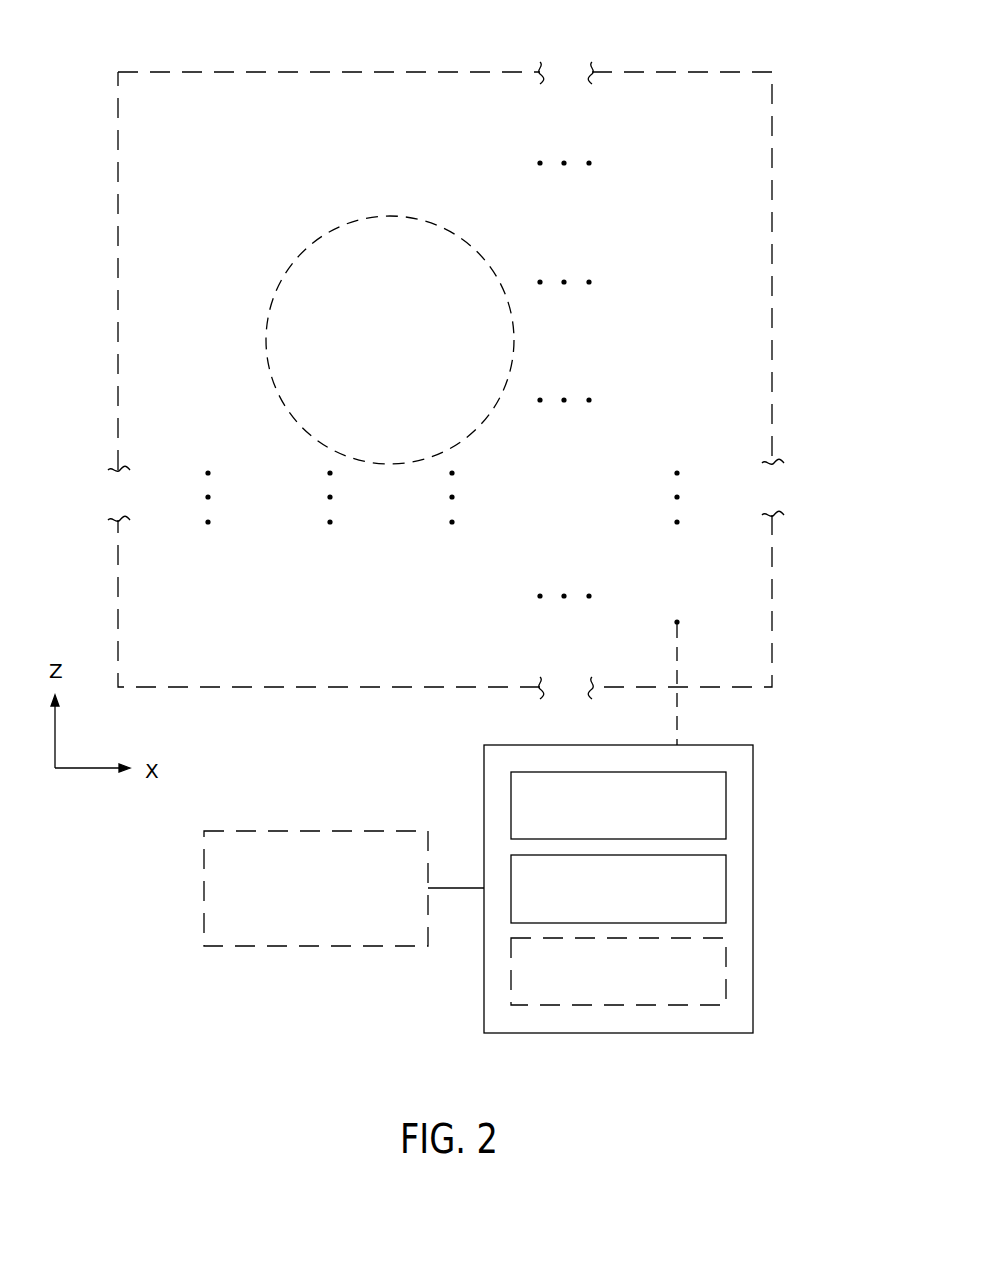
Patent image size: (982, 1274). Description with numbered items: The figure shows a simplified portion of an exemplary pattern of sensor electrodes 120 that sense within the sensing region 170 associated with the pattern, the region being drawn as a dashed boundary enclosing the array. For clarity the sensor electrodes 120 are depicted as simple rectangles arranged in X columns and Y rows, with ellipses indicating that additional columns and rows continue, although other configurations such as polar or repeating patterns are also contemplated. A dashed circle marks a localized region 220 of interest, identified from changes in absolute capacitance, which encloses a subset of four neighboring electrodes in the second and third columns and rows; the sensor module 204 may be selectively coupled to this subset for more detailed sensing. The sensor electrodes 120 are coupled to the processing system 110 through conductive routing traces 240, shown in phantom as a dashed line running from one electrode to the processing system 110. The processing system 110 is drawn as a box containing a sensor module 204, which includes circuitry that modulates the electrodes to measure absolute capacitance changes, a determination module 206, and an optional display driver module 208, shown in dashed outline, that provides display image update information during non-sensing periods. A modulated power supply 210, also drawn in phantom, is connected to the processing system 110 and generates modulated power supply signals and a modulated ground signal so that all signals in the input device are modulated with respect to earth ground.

The sensing region 170 is at (339, 71).
The sensor electrodes 120 is at (445, 379).
The localized region 220 is at (514, 334).
The conductive routing traces 240 is at (680, 701).
The processing system 110 is at (502, 745).
The sensor module 204 is at (727, 797).
The determination module 206 is at (727, 880).
The display driver module 208 is at (727, 965).
The modulated power supply 210 is at (297, 925).